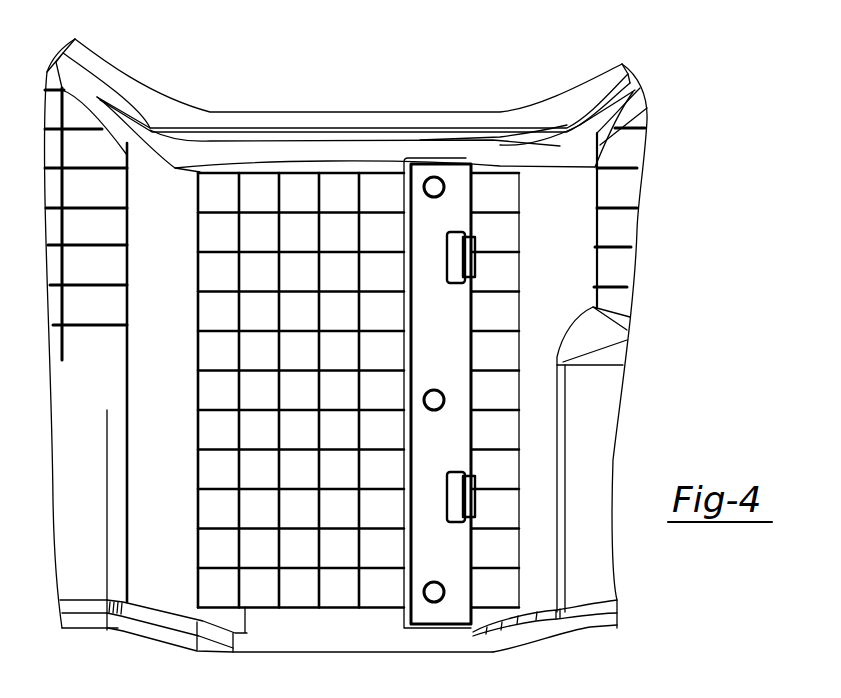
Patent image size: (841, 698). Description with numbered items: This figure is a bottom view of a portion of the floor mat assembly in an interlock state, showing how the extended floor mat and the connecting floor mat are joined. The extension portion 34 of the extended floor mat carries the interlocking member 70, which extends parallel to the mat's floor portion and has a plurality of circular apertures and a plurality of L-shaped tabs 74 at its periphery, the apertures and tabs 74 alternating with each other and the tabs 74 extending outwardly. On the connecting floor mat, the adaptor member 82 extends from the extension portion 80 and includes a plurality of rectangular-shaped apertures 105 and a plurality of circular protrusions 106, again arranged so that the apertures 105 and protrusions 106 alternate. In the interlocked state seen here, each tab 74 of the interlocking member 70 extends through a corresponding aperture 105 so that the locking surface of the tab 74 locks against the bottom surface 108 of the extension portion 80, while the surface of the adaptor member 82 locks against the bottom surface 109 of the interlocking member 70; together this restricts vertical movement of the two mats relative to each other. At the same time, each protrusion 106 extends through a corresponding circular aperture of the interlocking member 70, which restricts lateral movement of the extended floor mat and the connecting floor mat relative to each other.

The extension portion 34 is at (214, 58).
The interlocking member 70 is at (316, 103).
The extension portion 80 is at (591, 76).
The adaptor member 82 is at (458, 150).
The bottom surface of the interlocking member 109 is at (405, 187).
The circular protrusions 106 is at (434, 177).
The rectangular-shaped apertures 105 is at (456, 262).
The L-shaped tabs 74 is at (473, 243).
The bottom surface of the extension portion 108 is at (490, 190).